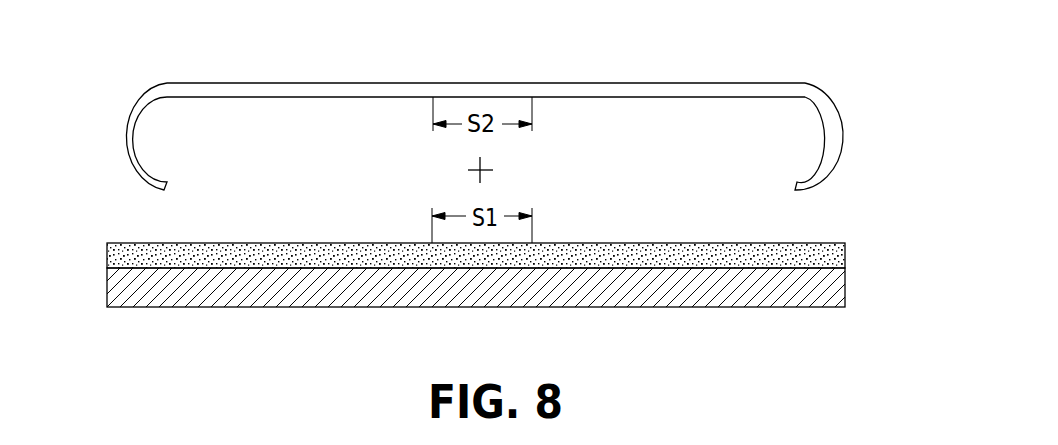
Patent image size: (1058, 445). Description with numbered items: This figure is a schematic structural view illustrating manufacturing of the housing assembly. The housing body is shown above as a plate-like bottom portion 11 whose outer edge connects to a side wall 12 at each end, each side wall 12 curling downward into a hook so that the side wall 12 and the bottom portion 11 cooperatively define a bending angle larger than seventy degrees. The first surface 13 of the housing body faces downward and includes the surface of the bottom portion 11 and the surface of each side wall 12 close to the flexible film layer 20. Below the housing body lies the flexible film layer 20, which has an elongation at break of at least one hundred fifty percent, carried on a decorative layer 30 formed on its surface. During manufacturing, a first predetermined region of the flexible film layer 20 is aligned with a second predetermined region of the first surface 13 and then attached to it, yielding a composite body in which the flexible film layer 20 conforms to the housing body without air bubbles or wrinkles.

The bottom portion 11 is at (657, 88).
The side wall 12 is at (130, 133).
The first surface 13 is at (348, 97).
The flexible film layer 20 is at (818, 263).
The decorative layer 30 is at (833, 297).